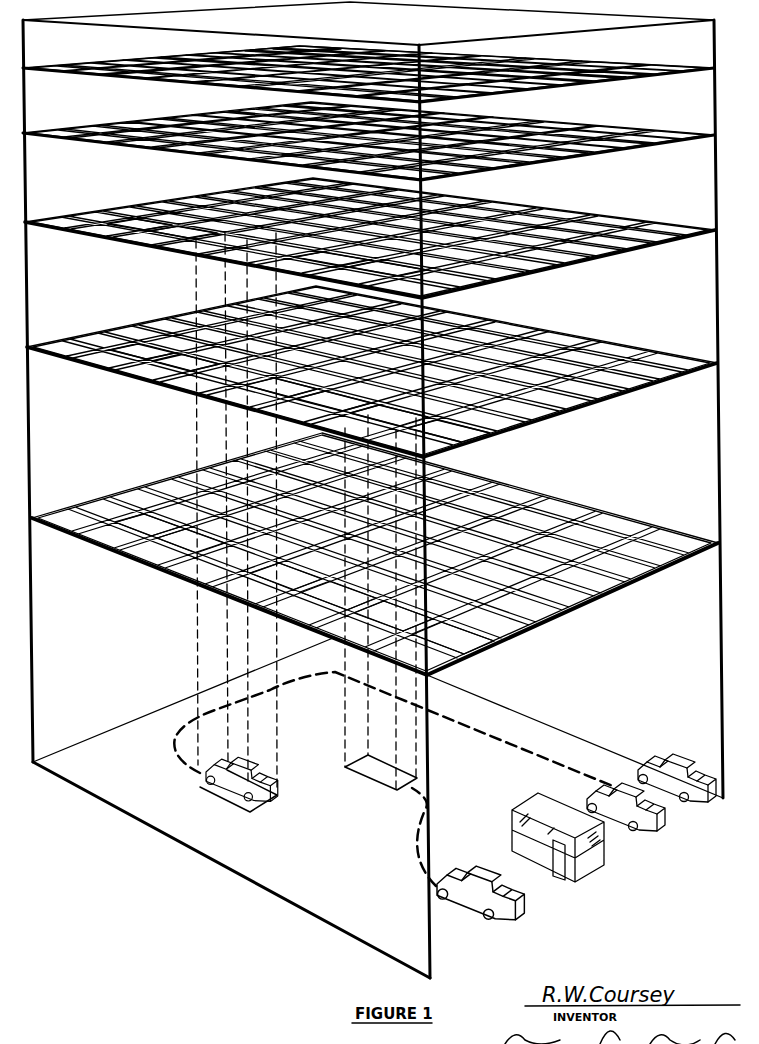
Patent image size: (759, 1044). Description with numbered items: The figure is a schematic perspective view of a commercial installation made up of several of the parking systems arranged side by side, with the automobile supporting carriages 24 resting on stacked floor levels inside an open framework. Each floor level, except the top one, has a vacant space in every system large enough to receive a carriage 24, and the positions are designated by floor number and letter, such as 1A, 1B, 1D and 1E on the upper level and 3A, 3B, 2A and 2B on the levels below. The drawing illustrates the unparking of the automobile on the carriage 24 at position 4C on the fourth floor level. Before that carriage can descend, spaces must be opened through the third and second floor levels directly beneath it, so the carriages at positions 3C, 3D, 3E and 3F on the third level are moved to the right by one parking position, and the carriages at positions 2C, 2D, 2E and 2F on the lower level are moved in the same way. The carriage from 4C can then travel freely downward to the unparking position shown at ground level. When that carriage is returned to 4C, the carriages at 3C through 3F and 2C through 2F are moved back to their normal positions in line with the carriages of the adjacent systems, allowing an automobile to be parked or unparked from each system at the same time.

The automobile supporting carriage 24 is at (257, 800).
The parking space 1A is at (139, 221).
The parking space 1B is at (183, 228).
The parking space 1D is at (319, 250).
The parking space 1E is at (375, 260).
The parking space 3A is at (142, 344).
The parking space 3B is at (185, 356).
The parking position 3C is at (281, 382).
The parking position 3D is at (333, 395).
The parking position 3E is at (389, 411).
The parking position 3F is at (448, 427).
The parking space 2A is at (147, 517).
The parking space 2B is at (191, 533).
The parking position 2C is at (286, 570).
The parking position 2D is at (338, 591).
The parking position 2E is at (393, 612).
The parking position 2F is at (453, 634).
The parking position 4C is at (237, 784).